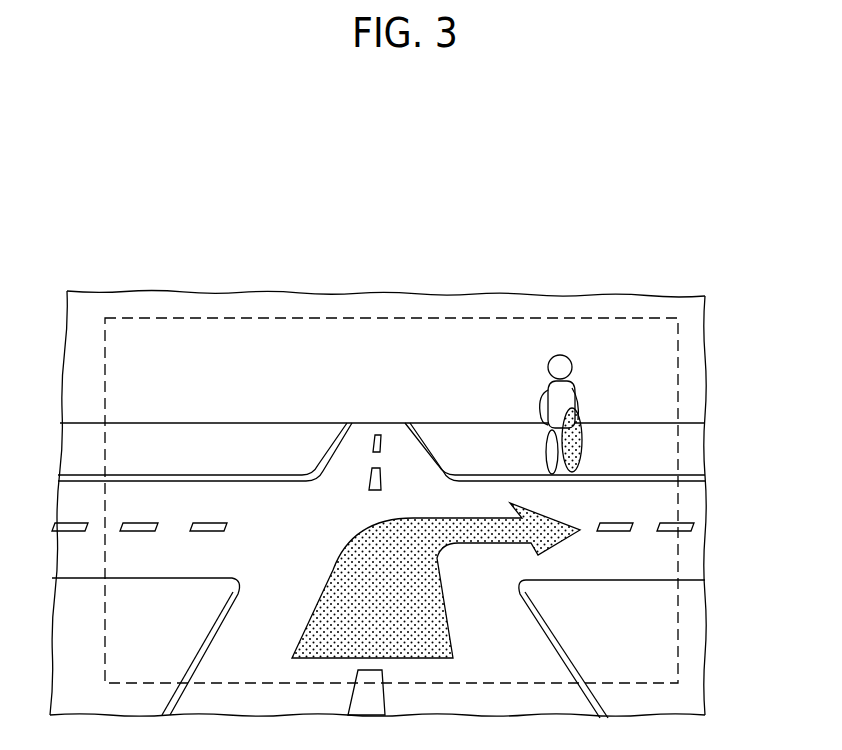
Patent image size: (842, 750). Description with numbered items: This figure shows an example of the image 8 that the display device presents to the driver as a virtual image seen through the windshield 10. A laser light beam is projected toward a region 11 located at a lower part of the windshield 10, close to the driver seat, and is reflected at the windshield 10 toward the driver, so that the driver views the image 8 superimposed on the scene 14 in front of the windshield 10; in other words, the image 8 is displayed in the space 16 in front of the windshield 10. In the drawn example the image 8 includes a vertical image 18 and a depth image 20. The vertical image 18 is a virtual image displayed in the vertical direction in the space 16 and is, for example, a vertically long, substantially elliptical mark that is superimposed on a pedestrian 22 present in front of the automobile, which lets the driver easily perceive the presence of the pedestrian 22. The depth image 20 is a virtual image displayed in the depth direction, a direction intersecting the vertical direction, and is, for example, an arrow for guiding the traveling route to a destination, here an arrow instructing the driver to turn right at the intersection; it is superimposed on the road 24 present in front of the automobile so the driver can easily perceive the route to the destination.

The image 8 is at (761, 399).
The windshield 10 is at (83, 332).
The region 11 is at (680, 350).
The scene 14 is at (246, 350).
The space 16 is at (394, 379).
The vertical image 18 is at (583, 440).
The depth image 20 is at (553, 517).
The pedestrian 22 is at (560, 358).
The road 24 is at (533, 637).